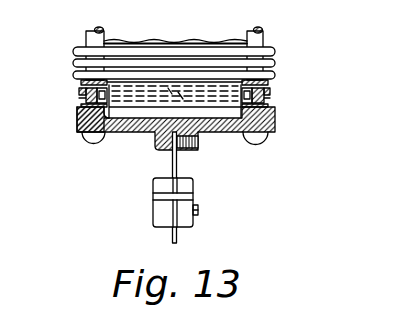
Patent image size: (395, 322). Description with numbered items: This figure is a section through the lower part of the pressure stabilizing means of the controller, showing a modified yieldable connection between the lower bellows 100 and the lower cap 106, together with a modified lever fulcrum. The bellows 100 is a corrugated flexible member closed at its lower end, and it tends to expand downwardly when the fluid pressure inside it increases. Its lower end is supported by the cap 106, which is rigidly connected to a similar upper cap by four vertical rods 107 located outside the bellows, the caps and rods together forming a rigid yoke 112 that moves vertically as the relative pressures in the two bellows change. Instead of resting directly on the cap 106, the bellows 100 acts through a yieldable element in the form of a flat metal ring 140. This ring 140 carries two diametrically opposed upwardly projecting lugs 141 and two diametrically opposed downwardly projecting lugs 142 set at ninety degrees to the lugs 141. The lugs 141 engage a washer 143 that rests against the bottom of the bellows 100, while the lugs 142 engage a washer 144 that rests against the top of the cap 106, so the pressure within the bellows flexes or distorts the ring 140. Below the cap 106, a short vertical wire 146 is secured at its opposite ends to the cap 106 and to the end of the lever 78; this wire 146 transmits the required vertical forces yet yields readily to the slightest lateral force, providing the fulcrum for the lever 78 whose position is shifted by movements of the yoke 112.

The lever 78 is at (194, 196).
The bellows 100 is at (275, 51).
The cap 106 is at (275, 124).
The vertical rods 107 is at (85, 41).
The yoke 112 is at (76, 123).
The flat metal ring 140 is at (270, 90).
The upwardly projecting lugs 141 is at (218, 115).
The downwardly projecting lugs 142 is at (78, 97).
The washer 143 is at (270, 84).
The washer 144 is at (270, 104).
The vertical wire 146 is at (172, 165).